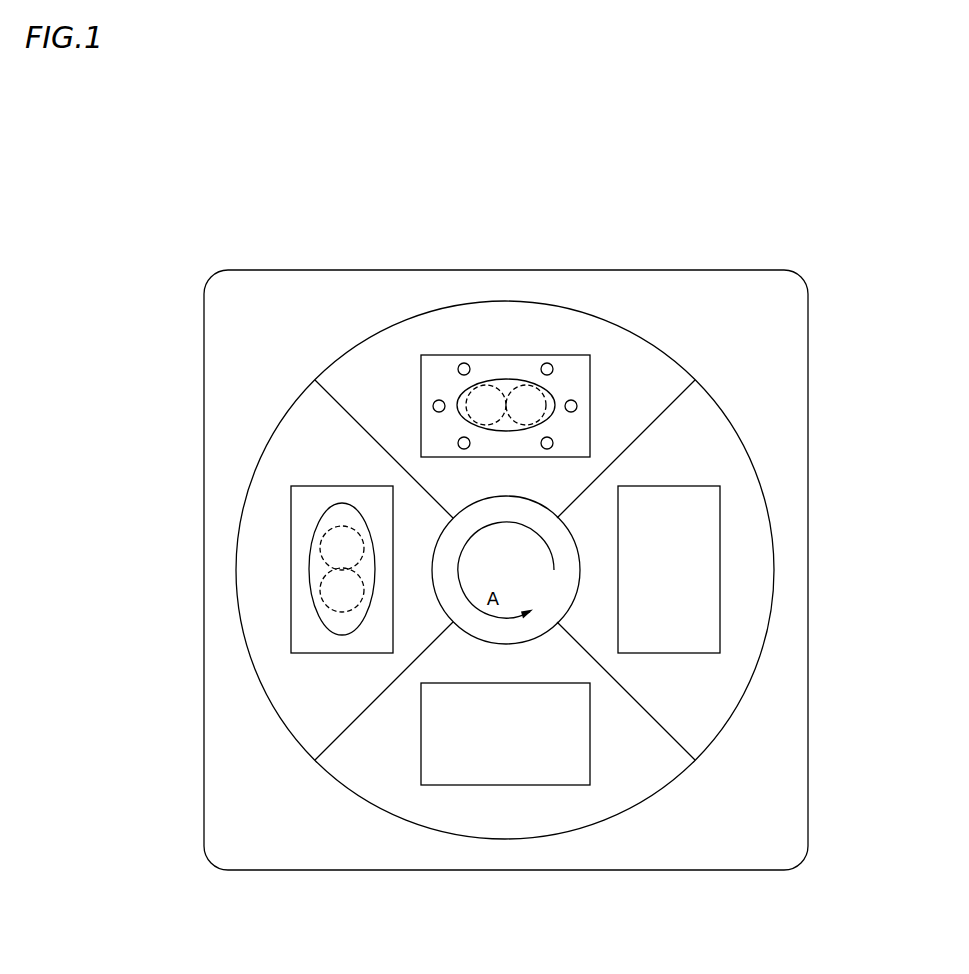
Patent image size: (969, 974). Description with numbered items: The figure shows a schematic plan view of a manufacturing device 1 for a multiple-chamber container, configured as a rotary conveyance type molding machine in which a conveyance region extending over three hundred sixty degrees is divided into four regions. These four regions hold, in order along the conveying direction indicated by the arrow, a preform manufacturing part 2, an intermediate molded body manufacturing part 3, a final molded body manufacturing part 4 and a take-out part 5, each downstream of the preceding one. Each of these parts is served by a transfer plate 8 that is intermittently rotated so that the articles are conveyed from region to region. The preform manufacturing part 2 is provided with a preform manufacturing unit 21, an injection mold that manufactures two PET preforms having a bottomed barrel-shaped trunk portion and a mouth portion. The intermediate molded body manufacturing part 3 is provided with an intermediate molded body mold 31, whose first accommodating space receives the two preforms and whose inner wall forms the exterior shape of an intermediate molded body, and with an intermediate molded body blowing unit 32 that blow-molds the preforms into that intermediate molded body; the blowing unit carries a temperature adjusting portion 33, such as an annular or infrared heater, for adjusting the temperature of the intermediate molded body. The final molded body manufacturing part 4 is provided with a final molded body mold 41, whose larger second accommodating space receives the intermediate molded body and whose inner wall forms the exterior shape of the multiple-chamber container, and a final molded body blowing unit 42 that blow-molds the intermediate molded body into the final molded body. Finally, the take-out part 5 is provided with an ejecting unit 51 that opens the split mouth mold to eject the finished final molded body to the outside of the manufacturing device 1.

The manufacturing device 1 is at (663, 198).
The preform manufacturing part 2 is at (742, 524).
The preform manufacturing unit 21 is at (720, 512).
The intermediate molded body manufacturing part 3 is at (481, 323).
The intermediate molded body mold 31 is at (478, 355).
The intermediate molded body blowing unit 32 is at (513, 380).
The temperature adjusting portion 33 is at (548, 364).
The final molded body manufacturing part 4 is at (261, 577).
The final molded body mold 41 is at (291, 575).
The final molded body blowing unit 42 is at (310, 545).
The take-out part 5 is at (523, 811).
The ejecting unit 51 is at (485, 787).
The transfer plate 8 is at (455, 305).